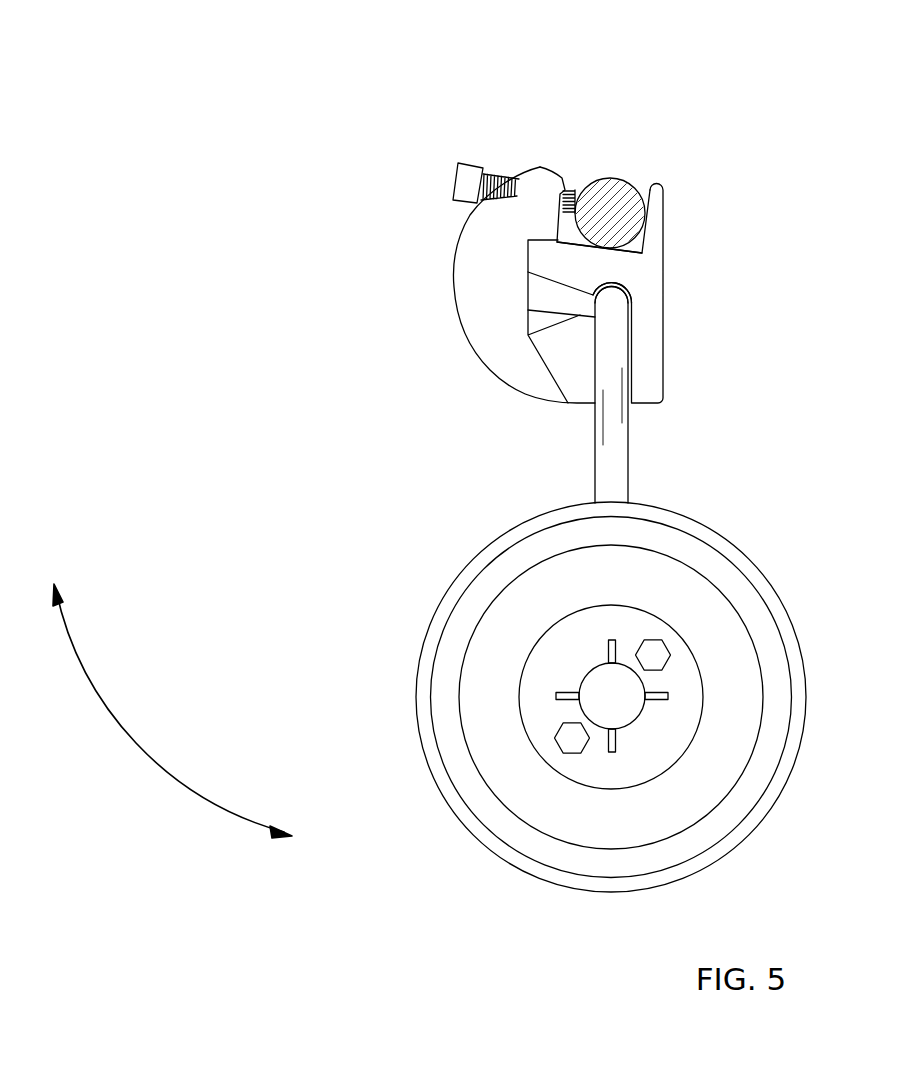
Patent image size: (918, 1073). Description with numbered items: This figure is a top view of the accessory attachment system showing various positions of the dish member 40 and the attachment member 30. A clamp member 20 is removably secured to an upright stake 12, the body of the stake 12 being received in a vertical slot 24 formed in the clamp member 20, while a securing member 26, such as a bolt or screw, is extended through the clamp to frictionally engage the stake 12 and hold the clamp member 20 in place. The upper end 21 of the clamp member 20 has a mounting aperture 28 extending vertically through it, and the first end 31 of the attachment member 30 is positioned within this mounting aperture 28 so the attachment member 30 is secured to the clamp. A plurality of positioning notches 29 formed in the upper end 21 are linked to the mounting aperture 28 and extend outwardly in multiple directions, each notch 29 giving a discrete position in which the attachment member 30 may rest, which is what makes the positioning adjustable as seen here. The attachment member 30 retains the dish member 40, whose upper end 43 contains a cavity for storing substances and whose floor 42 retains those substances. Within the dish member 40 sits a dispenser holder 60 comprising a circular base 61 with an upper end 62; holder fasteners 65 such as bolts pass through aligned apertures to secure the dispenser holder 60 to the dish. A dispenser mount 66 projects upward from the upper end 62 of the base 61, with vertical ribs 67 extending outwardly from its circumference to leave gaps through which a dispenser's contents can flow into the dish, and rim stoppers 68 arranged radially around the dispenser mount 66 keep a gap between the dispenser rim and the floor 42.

The stake 12 is at (611, 208).
The clamp member 20 is at (460, 328).
The upper end 21 is at (637, 277).
The vertical slot 24 is at (645, 243).
The securing member 26 is at (461, 177).
The mounting aperture 28 is at (625, 296).
The positioning notches 29 is at (543, 268).
The attachment member 30 is at (628, 452).
The first end 31 is at (618, 304).
The dish member 40 is at (532, 876).
The floor 42 is at (623, 710).
The upper end 43 is at (687, 868).
The dispenser holder 60 is at (583, 605).
The base 61 is at (655, 655).
The upper end 62 is at (653, 765).
The holder fasteners 65 is at (645, 632).
The dispenser mount 66 is at (683, 855).
The ribs 67 is at (640, 703).
The rim stoppers 68 is at (619, 652).